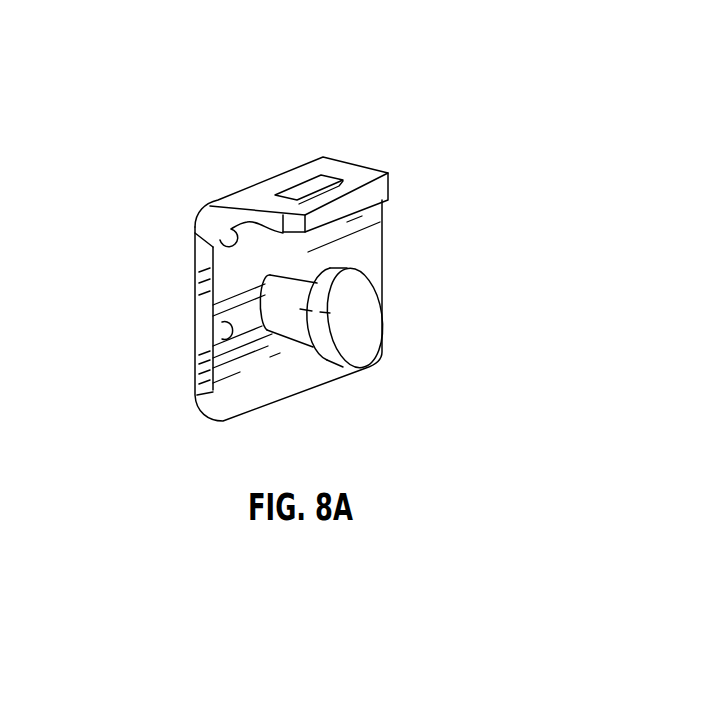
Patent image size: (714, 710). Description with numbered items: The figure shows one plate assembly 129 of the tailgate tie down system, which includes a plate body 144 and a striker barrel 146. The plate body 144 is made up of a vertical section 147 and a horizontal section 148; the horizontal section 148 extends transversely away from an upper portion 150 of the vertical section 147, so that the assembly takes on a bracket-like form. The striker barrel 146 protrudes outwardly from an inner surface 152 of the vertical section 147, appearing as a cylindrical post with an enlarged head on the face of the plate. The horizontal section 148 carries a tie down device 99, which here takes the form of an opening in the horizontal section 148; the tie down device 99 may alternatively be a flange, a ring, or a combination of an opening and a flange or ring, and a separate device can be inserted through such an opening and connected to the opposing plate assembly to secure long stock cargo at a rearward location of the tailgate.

The first plate assembly 129 is at (353, 76).
The plate body 144 is at (143, 273).
The horizontal section 148 is at (250, 195).
The tie down device 99 is at (312, 193).
The upper portion 150 is at (198, 233).
The vertical section 147 is at (213, 337).
The inner surface 152 is at (283, 400).
The striker barrel 146 is at (297, 347).